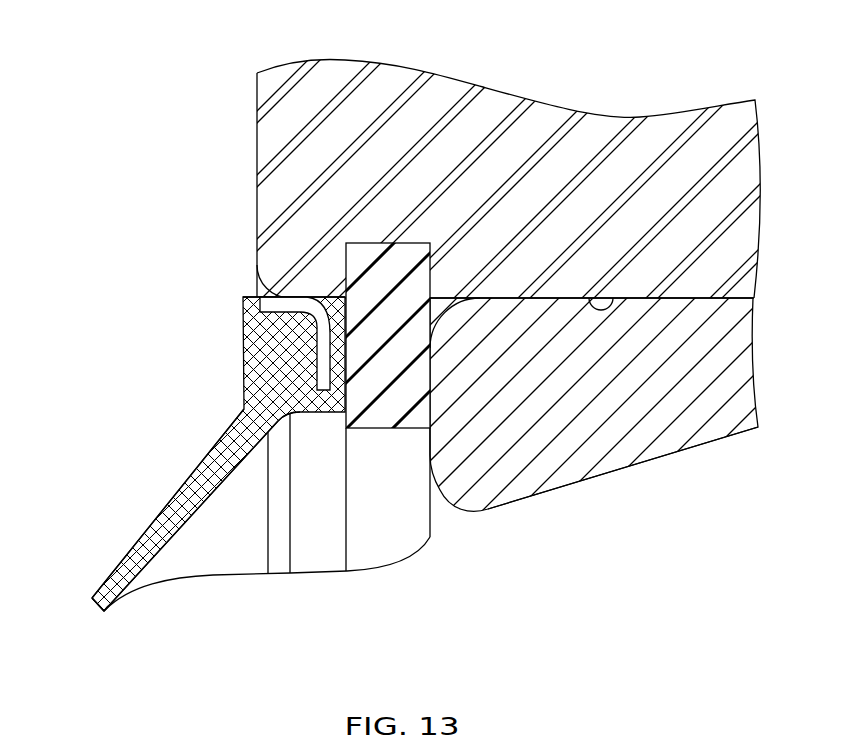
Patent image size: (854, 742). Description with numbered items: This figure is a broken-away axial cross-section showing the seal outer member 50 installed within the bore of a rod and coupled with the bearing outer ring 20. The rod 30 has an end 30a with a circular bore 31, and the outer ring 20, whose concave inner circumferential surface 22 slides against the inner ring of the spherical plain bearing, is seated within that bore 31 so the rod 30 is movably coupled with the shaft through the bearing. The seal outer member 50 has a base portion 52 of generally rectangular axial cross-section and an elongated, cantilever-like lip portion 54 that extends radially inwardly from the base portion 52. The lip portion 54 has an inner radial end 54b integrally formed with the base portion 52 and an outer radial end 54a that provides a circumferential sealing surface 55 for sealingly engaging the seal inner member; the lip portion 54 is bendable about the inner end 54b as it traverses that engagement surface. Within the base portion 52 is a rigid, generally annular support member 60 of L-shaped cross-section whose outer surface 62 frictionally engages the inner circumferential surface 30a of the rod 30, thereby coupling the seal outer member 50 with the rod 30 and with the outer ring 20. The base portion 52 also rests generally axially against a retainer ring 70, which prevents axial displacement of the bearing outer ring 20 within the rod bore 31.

The outer ring 20 is at (613, 473).
The concave inner circumferential surface 22 is at (677, 443).
The rod 30 is at (222, 153).
The rod end / inner circumferential surface of the rod 30a is at (260, 230).
The circular bore 31 is at (591, 298).
The seal outer member 50 is at (152, 426).
The base portion 52 is at (222, 327).
The lip portion 54 is at (157, 484).
The outer end of lip portion 54a is at (98, 593).
The inner radial end of lip portion 54b is at (253, 398).
The circumferential sealing surface 55 is at (96, 606).
The support member 60 is at (298, 278).
The outer surface of support member 62 is at (294, 297).
The retainer ring 70 is at (392, 228).